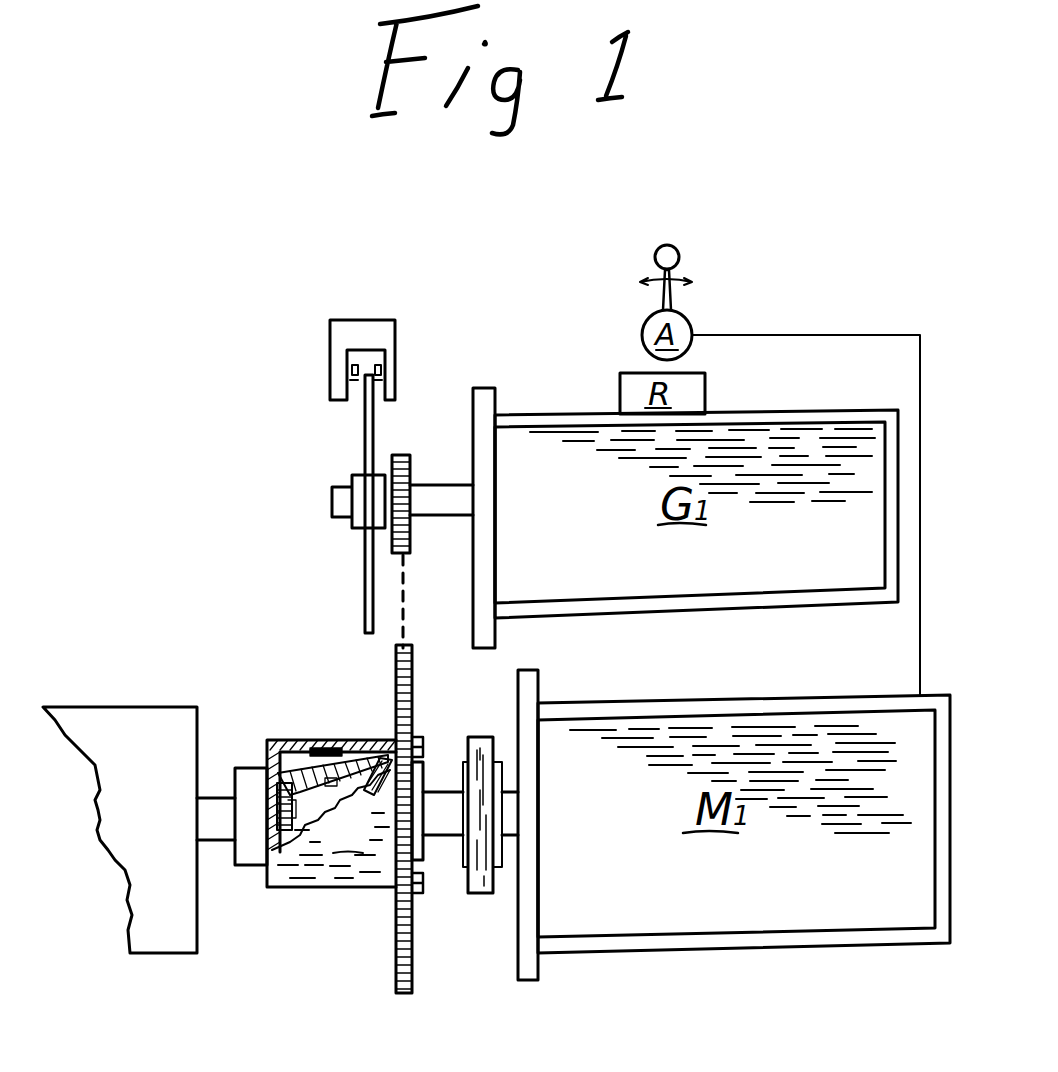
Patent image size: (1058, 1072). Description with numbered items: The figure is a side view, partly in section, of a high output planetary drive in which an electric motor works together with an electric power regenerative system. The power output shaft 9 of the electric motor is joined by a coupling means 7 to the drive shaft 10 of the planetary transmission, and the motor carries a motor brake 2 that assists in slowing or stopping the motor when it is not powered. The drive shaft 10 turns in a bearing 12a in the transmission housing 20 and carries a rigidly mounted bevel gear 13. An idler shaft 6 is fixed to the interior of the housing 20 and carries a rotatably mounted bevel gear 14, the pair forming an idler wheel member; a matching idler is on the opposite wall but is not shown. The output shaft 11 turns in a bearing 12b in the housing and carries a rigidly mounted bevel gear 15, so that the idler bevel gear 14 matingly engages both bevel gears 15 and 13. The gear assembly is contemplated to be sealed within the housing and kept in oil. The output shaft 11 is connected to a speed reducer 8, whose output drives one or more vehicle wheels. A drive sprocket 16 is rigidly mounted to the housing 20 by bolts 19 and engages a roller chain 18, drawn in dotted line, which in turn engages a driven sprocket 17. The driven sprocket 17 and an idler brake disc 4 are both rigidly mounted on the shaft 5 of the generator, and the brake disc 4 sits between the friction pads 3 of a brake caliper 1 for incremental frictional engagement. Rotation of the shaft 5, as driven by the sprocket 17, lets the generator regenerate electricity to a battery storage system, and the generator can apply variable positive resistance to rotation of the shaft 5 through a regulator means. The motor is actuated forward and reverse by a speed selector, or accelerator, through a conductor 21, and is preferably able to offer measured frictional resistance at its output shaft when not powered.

The brake caliper 1 is at (370, 327).
The motor brake 2 is at (479, 742).
The friction pads 3 is at (375, 374).
The idler brake disc 4 is at (363, 443).
The shaft of generator 5 is at (427, 497).
The idler shaft 6 is at (330, 786).
The coupling means 7 is at (456, 767).
The speed reducer 8 is at (160, 757).
The power output shaft 9 is at (510, 793).
The drive shaft 10 is at (451, 803).
The output shaft 11 is at (223, 810).
The bearing 12a is at (418, 850).
The bearing 12b is at (253, 787).
The bevel gear 13 is at (392, 740).
The bevel gear 14 is at (356, 750).
The bevel gear 15 is at (290, 740).
The drive sprocket 16 is at (413, 666).
The driven sprocket 17 is at (408, 467).
The roller chain 18 is at (418, 592).
The bolts 19 is at (418, 890).
The housing 20 is at (290, 887).
The conductor 21 is at (908, 367).